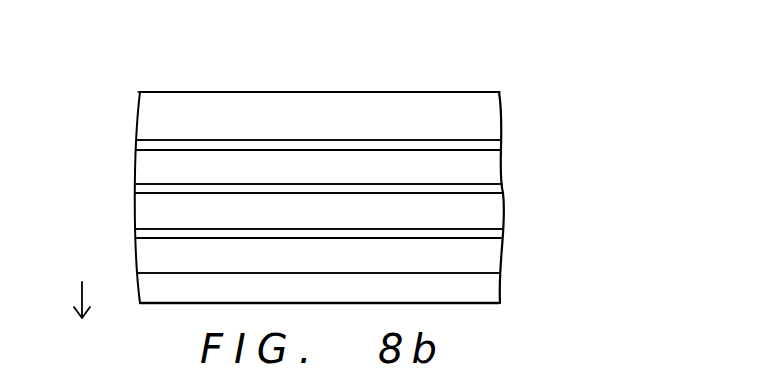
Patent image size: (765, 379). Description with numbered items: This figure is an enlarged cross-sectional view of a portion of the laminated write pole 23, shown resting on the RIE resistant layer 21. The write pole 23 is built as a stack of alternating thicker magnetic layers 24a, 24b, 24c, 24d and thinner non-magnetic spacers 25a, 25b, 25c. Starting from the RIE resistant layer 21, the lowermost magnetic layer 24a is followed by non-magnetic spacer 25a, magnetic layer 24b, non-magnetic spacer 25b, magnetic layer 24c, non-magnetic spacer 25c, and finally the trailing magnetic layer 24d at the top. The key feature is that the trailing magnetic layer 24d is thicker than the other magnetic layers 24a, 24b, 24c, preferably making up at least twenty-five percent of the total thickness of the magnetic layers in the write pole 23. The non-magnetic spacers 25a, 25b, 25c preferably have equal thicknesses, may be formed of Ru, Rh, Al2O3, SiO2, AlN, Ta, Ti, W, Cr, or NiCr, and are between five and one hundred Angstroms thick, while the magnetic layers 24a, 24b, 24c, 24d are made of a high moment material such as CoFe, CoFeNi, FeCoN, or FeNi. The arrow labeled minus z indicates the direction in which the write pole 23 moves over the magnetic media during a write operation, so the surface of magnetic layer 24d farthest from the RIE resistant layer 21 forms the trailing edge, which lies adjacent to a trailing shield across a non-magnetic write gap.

The write pole 23 is at (117, 56).
The RIE resistant layer 21 is at (498, 289).
The magnetic layer 24a is at (498, 254).
The magnetic layer 24b is at (498, 209).
The magnetic layer 24c is at (498, 171).
The trailing magnetic layer 24d is at (498, 116).
The non-magnetic spacer 25a is at (142, 240).
The non-magnetic spacer 25b is at (142, 194).
The non-magnetic spacer 25c is at (142, 150).